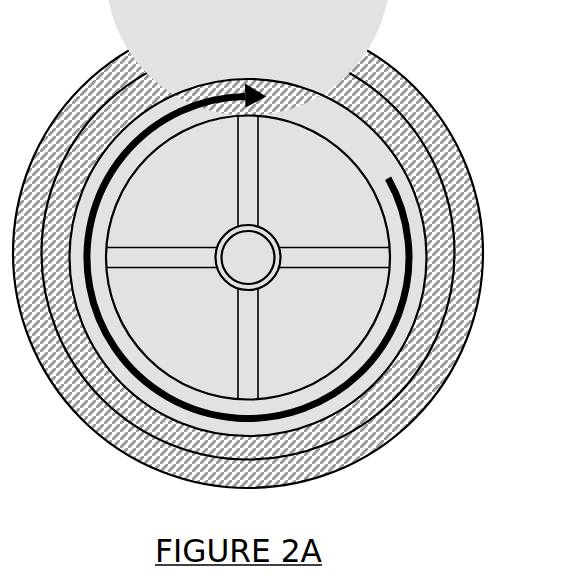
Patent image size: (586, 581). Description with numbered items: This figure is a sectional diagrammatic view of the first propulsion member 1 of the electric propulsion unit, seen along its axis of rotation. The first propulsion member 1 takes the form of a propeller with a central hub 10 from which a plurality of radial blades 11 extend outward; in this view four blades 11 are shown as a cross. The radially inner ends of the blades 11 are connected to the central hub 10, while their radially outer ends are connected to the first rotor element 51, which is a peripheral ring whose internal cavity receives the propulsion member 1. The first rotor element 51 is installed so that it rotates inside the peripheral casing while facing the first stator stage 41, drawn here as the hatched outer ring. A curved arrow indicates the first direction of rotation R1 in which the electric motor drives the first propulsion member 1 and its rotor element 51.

The first propulsion member 1 is at (304, 218).
The first stator stage 41 is at (441, 125).
The first rotor element 51 is at (367, 182).
The first direction of rotation R1 is at (410, 247).
The radial blades 11 is at (235, 162).
The central hub 10 is at (222, 283).